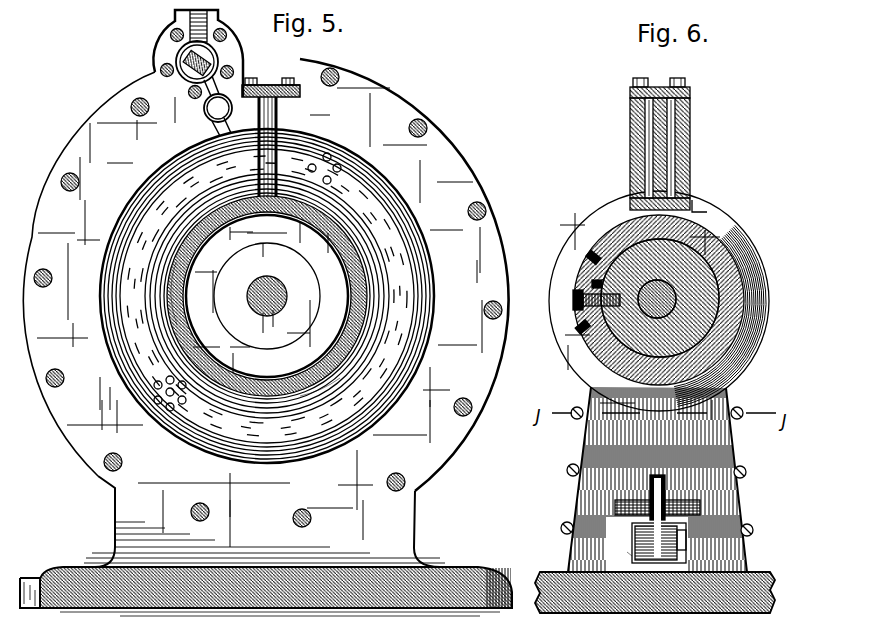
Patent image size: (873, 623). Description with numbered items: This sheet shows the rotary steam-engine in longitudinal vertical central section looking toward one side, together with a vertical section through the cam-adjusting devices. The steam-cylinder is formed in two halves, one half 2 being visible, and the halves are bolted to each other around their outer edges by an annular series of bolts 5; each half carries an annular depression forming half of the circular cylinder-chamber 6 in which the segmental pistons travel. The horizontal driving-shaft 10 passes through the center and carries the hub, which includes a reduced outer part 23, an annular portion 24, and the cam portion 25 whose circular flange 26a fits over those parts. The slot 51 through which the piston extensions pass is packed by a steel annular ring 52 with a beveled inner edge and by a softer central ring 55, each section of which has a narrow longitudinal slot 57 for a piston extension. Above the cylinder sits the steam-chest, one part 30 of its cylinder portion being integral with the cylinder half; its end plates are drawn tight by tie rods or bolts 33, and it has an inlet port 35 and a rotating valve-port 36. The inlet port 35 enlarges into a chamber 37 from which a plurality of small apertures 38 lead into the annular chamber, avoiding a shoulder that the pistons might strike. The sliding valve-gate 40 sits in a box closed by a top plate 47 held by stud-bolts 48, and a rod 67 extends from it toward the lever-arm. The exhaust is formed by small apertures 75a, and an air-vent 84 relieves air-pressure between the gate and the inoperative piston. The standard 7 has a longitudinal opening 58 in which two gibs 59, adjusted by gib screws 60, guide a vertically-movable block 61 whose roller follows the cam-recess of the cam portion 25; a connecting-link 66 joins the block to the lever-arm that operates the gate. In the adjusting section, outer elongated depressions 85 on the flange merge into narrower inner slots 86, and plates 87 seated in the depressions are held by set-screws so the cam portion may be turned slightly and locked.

In FIG. 5, the steam-cylinder half 2 is at (447, 182).
In FIG. 5, the annular series of bolts 5 is at (70, 173).
In FIG. 5, the circular cylinder-chamber 6 is at (412, 300).
In FIG. 5, the driving-shaft 10 is at (268, 288).
In FIG. 6, the driving-shaft 10 is at (673, 288).
In FIG. 5, the annular portion 24 is at (318, 302).
In FIG. 5, the steam-chest cylinder part 30 is at (167, 50).
In FIG. 5, the tie rods or bolts 33 is at (210, 47).
In FIG. 5, the inlet port 35 is at (153, 74).
In FIG. 5, the rotating valve-port 36 is at (212, 60).
In FIG. 5, the chamber 37 is at (265, 85).
In FIG. 5, the small apertures 38 is at (277, 108).
In FIG. 5, the top plate 47 is at (300, 86).
In FIG. 6, the top plate 47 is at (690, 90).
In FIG. 5, the stud-bolts 48 is at (258, 77).
In FIG. 6, the stud-bolts 48 is at (640, 80).
In FIG. 5, the slot 51 is at (362, 345).
In FIG. 5, the annular ring 52 is at (200, 224).
In FIG. 5, the central ring 55 is at (177, 325).
In FIG. 5, the longitudinal slot 57 is at (340, 378).
In FIG. 5, the small apertures 75a is at (168, 411).
In FIG. 5, the air-vent 84 is at (340, 163).
In FIG. 6, the standard 7 is at (720, 528).
In FIG. 6, the reduced outer part 23 is at (715, 303).
In FIG. 6, the cam portion 25 is at (707, 210).
In FIG. 6, the circular flange 26a is at (712, 350).
In FIG. 6, the valve-gate 40 is at (655, 140).
In FIG. 6, the longitudinal opening 58 is at (675, 570).
In FIG. 6, the gibs 59 is at (618, 503).
In FIG. 6, the gib screws or bolts 60 is at (575, 408).
In FIG. 6, the vertically-movable block 61 is at (643, 467).
In FIG. 6, the connecting-link 66 is at (650, 527).
In FIG. 6, the rod 67 is at (627, 552).
In FIG. 6, the outer elongated depressions 85 is at (590, 252).
In FIG. 6, the inner enlarged slots 86 is at (580, 313).
In FIG. 6, the plates 87 is at (572, 288).